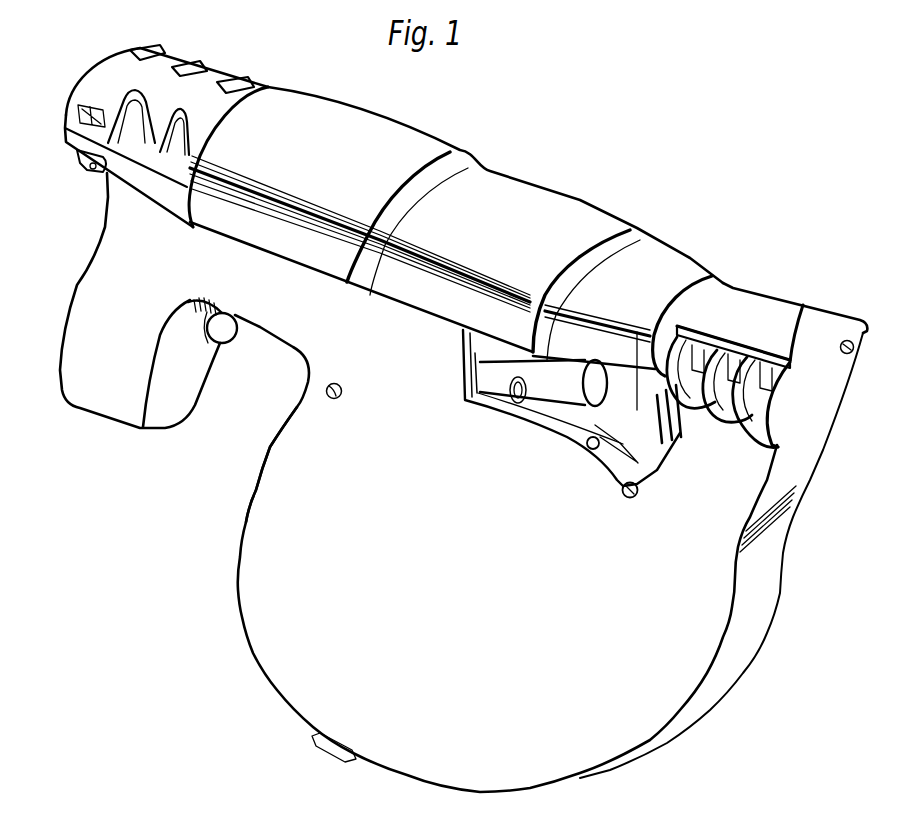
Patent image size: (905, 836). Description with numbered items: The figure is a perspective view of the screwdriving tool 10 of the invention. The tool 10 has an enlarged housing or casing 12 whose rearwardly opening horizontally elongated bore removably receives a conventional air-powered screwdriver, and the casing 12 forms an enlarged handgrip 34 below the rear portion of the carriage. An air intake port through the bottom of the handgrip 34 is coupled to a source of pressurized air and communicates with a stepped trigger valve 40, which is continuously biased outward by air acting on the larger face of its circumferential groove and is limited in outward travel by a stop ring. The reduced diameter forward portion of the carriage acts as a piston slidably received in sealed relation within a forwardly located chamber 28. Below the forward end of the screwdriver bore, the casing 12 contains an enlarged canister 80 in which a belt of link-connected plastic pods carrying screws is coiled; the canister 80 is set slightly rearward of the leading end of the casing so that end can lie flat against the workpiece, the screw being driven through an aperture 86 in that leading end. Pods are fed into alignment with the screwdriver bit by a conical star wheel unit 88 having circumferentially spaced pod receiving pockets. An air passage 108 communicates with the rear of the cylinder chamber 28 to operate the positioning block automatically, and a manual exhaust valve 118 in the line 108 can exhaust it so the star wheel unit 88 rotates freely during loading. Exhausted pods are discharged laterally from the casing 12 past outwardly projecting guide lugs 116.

The screwdriving tool 10 is at (577, 197).
The housing 12 is at (279, 506).
The chamber 28 is at (567, 377).
The handgrip 34 is at (64, 320).
The trigger valve 40 is at (219, 343).
The canister 80 is at (265, 632).
The aperture 86 is at (853, 352).
The conical star wheel unit 88 is at (748, 358).
The air passage 108 is at (622, 452).
The guide lugs 116 is at (750, 412).
The manual exhaust valve 118 is at (590, 448).